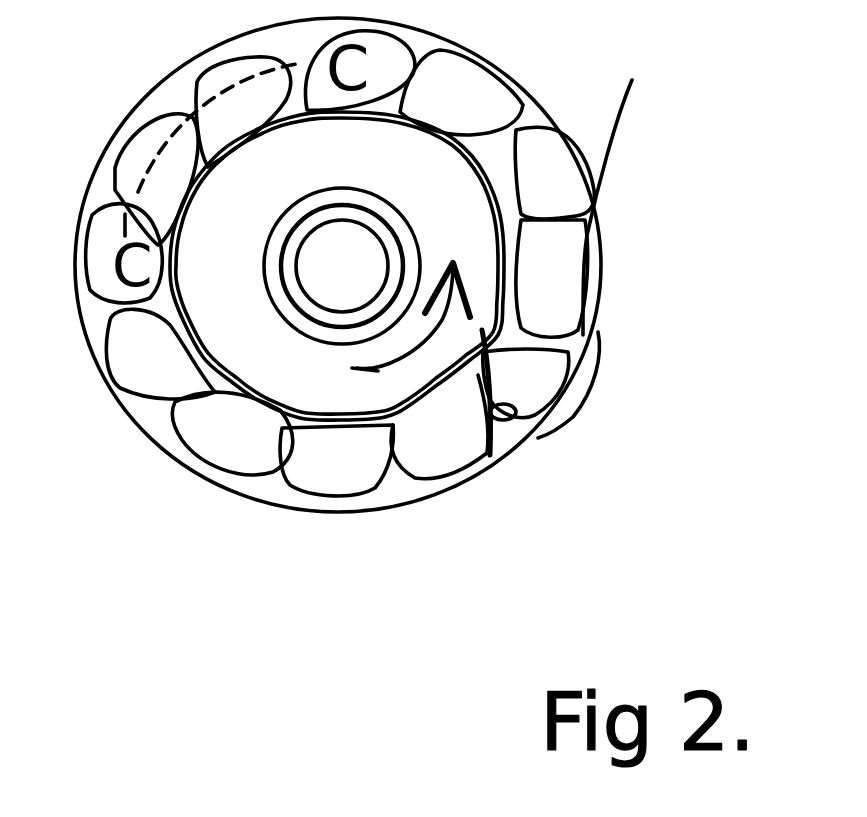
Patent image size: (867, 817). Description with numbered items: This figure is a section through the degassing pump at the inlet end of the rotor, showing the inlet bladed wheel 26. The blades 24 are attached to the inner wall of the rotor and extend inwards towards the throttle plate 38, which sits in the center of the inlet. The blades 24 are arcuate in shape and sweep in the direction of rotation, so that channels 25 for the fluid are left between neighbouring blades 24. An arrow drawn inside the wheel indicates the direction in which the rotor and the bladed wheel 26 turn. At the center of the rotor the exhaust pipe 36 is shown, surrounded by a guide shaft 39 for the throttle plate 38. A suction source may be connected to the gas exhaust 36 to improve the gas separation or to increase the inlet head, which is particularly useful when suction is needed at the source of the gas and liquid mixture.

The blades 24 is at (522, 95).
The channels 25 is at (525, 153).
The inlet bladed wheel 26 is at (598, 332).
The exhaust pipe 36 is at (378, 372).
The throttle plate 38 is at (517, 417).
The guide shaft 39 is at (408, 413).